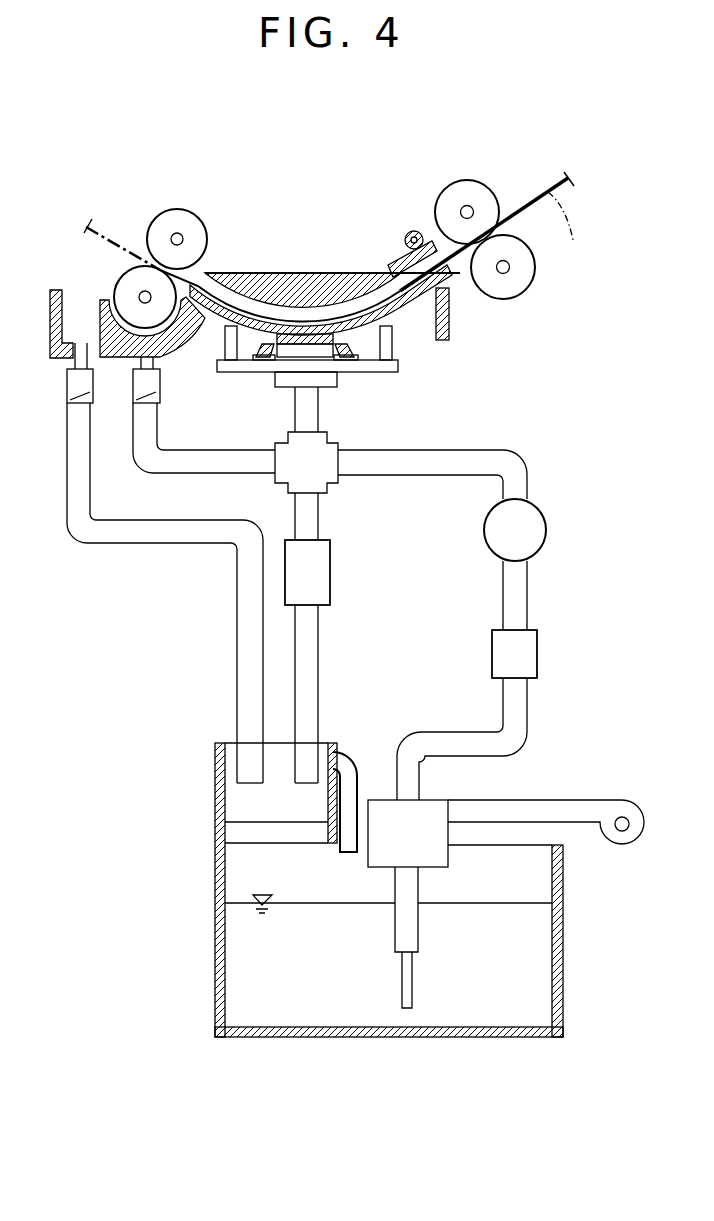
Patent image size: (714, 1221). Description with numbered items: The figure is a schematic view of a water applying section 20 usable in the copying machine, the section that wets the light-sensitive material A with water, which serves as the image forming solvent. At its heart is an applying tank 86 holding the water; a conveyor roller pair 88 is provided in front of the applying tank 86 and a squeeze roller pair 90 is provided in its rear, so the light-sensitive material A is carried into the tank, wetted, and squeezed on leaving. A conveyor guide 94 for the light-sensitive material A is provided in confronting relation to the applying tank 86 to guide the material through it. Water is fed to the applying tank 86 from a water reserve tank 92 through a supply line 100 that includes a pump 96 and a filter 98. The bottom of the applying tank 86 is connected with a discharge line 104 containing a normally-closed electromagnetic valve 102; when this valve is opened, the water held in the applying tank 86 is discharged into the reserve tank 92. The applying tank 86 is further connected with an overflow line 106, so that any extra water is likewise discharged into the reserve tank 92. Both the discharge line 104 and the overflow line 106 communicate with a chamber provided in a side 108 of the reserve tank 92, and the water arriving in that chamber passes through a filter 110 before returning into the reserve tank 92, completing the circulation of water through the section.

The water applying section 20 is at (320, 178).
The light-sensitive material A is at (568, 234).
The applying tank 86 is at (403, 322).
The conveyor roller pair 88 is at (517, 293).
The squeeze roller pair 90 is at (177, 209).
The water reserve tank 92 is at (563, 925).
The conveyor guide 94 is at (295, 270).
The pump 96 is at (546, 528).
The filter 98 is at (537, 654).
The supply line 100 is at (494, 458).
The electromagnetic valve 102 is at (330, 574).
The discharge line 104 is at (318, 660).
The overflow line 106 is at (98, 537).
The side of the reserve tank 108 is at (243, 808).
The filter 110 is at (258, 837).